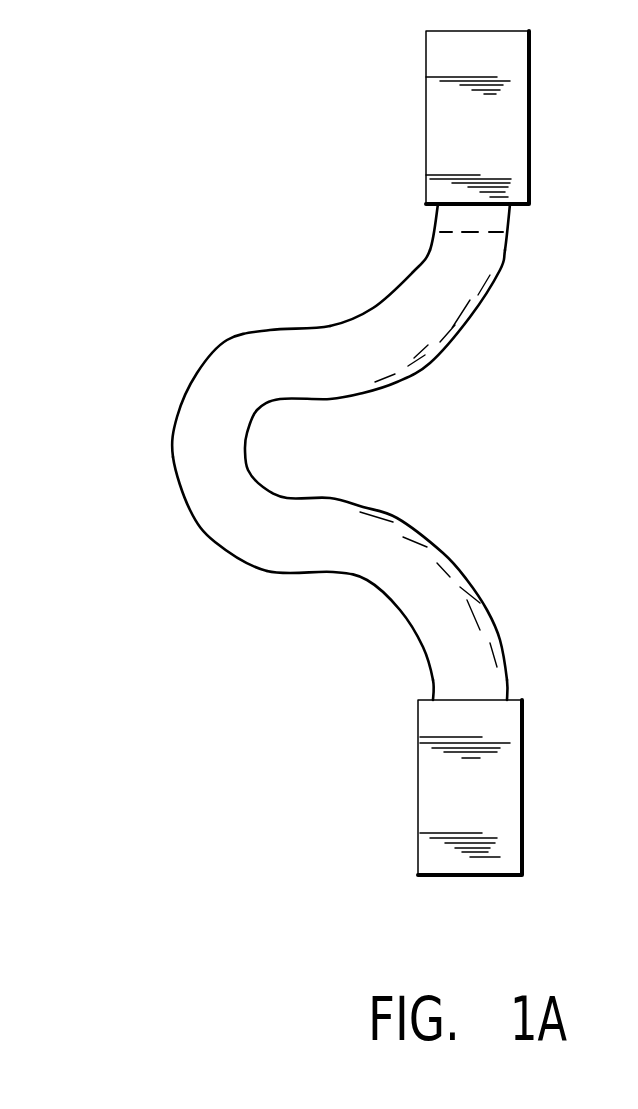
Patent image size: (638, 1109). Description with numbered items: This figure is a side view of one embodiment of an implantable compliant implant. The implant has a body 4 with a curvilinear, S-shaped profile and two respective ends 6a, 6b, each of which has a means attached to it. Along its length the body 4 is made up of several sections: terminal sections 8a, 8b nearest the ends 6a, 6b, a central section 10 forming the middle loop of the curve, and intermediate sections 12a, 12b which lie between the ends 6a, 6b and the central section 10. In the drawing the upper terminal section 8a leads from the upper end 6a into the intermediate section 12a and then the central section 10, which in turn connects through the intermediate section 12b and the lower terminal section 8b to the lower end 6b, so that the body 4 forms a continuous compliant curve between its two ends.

The central section 10 is at (287, 453).
The body 4 is at (420, 392).
The end 6a is at (447, 220).
The end 6b is at (443, 688).
The terminal section 8a is at (324, 286).
The terminal section 8b is at (300, 587).
The intermediate section 12a is at (216, 327).
The intermediate section 12b is at (196, 549).